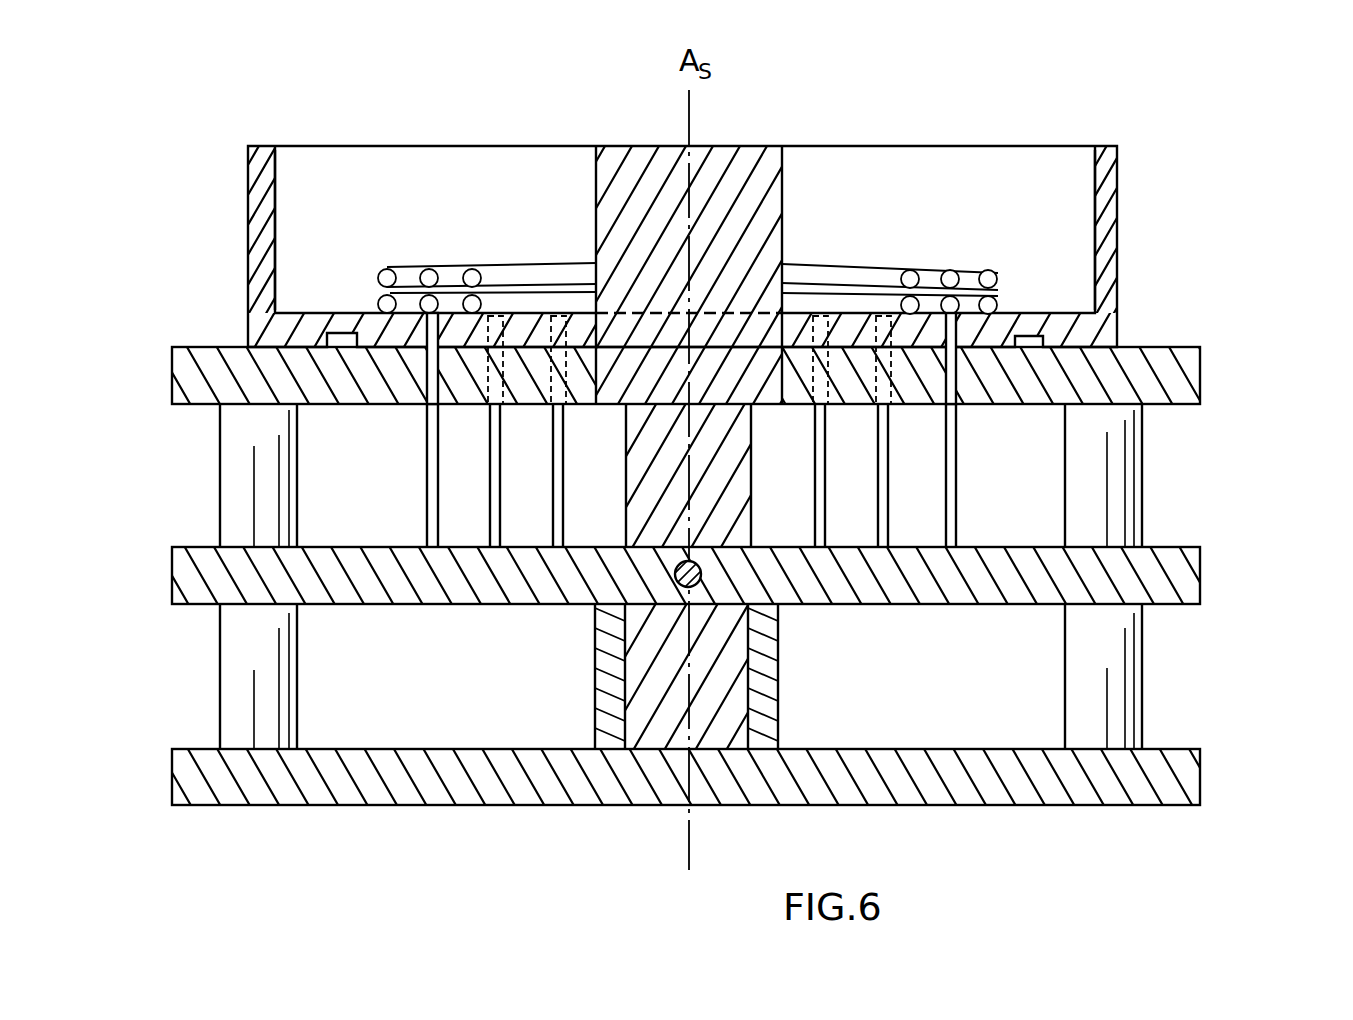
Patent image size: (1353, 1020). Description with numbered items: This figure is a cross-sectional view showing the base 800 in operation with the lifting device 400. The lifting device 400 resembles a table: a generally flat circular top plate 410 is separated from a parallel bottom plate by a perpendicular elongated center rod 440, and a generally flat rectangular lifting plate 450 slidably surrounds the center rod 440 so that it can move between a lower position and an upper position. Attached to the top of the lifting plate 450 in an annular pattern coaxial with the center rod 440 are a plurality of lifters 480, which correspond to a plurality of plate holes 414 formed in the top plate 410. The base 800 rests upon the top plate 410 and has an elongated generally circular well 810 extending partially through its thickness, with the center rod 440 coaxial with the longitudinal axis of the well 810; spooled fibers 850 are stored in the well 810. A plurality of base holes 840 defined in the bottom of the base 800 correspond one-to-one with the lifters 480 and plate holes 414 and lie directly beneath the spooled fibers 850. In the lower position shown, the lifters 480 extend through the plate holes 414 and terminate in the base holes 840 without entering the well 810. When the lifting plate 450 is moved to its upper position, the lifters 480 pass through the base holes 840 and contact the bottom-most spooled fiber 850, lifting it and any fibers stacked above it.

The lifting device 400 is at (1202, 592).
The top plate 410 is at (1173, 347).
The plate holes 414 is at (892, 418).
The center rod 440 is at (663, 457).
The lifting plate 450 is at (1173, 547).
The lifters 480 is at (553, 467).
The base 800 is at (1107, 263).
The well 810 is at (1068, 207).
The base holes 840 is at (550, 373).
The spooled fibers 850 is at (380, 302).